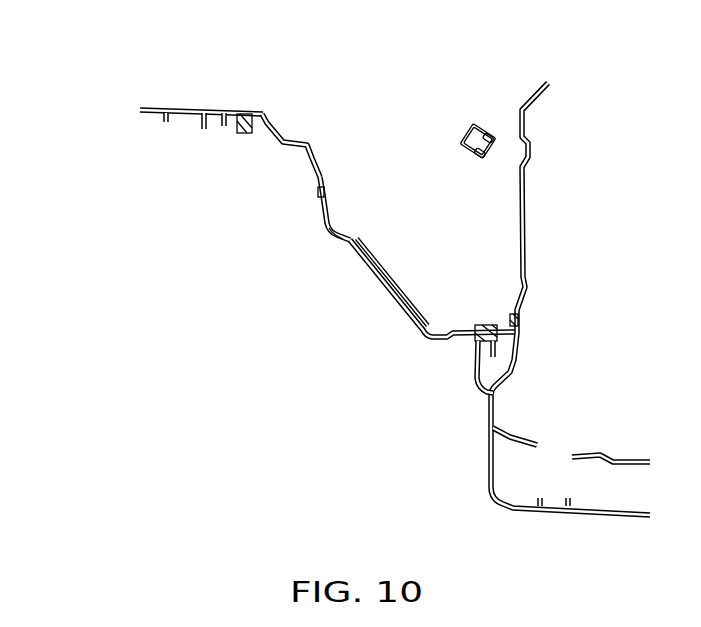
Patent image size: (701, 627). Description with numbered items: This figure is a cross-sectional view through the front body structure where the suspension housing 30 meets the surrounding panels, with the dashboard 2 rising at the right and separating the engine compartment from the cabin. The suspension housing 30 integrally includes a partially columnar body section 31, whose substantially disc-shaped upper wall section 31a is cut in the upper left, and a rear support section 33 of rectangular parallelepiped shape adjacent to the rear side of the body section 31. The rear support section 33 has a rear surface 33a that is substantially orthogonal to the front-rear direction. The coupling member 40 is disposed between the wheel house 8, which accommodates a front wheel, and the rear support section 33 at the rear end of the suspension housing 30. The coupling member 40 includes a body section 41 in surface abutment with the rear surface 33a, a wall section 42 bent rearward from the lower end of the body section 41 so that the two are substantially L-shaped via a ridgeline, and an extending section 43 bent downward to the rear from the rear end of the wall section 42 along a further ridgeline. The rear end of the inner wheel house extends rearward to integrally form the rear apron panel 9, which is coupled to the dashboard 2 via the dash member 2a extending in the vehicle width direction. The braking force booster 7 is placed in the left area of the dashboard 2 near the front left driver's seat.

The dashboard 2 is at (530, 299).
The dash member 2a is at (471, 372).
The braking force booster 7 is at (470, 122).
The wheel house 8 is at (395, 289).
The rear apron panel 9 is at (467, 328).
The suspension housing 30 is at (275, 171).
The body section 31 is at (201, 84).
The upper wall section 31a is at (167, 107).
The rear support section 33 is at (313, 135).
The rear surface 33a is at (317, 157).
The coupling member 40 is at (356, 230).
The body section 41 is at (343, 188).
The wall section 42 is at (341, 236).
The extending section 43 is at (350, 255).